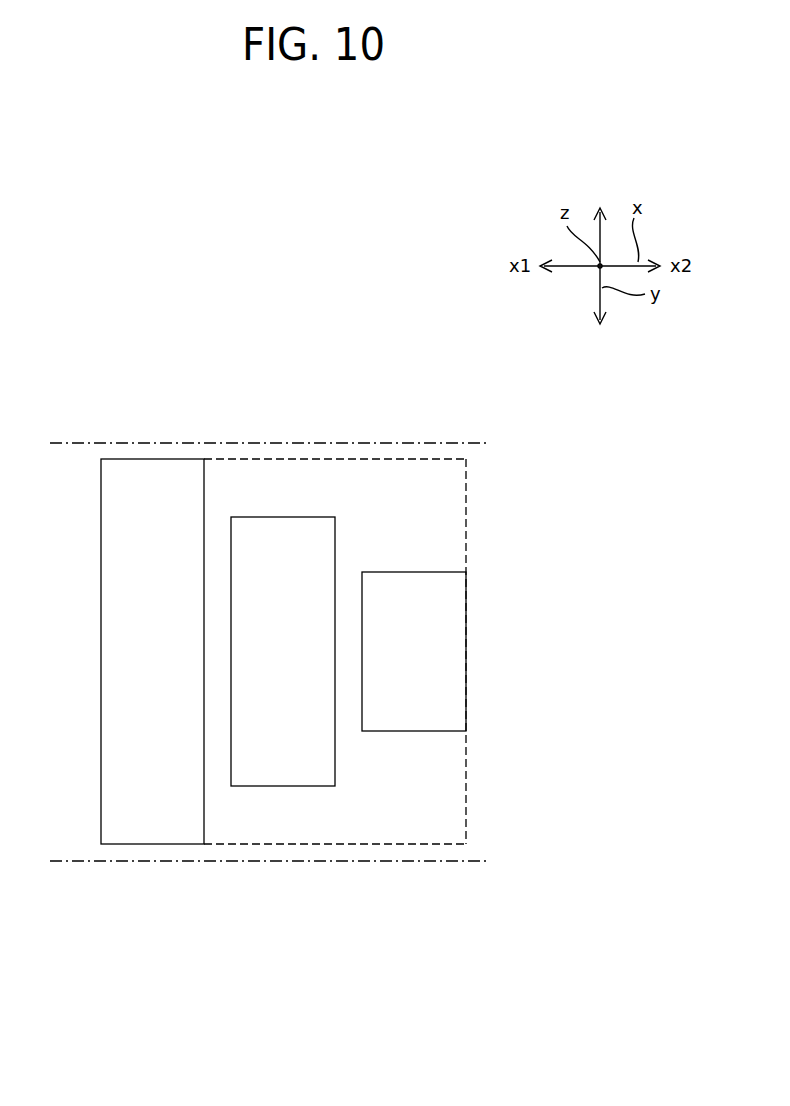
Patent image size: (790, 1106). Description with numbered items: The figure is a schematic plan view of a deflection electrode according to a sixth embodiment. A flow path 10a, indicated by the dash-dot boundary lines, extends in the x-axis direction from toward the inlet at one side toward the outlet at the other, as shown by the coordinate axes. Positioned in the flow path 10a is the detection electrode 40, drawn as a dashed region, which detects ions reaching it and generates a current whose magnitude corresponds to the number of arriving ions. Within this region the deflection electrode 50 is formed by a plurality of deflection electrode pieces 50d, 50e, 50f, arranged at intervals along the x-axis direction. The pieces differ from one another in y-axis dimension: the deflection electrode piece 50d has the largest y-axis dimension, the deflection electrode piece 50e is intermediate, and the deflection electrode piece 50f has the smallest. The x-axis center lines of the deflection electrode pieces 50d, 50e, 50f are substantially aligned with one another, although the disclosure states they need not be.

The flow path 10a is at (467, 447).
The detection electrode 40 is at (467, 545).
The deflection electrode 50 is at (442, 948).
The deflection electrode piece 50d is at (155, 844).
The deflection electrode piece 50e is at (285, 786).
The deflection electrode piece 50f is at (412, 731).